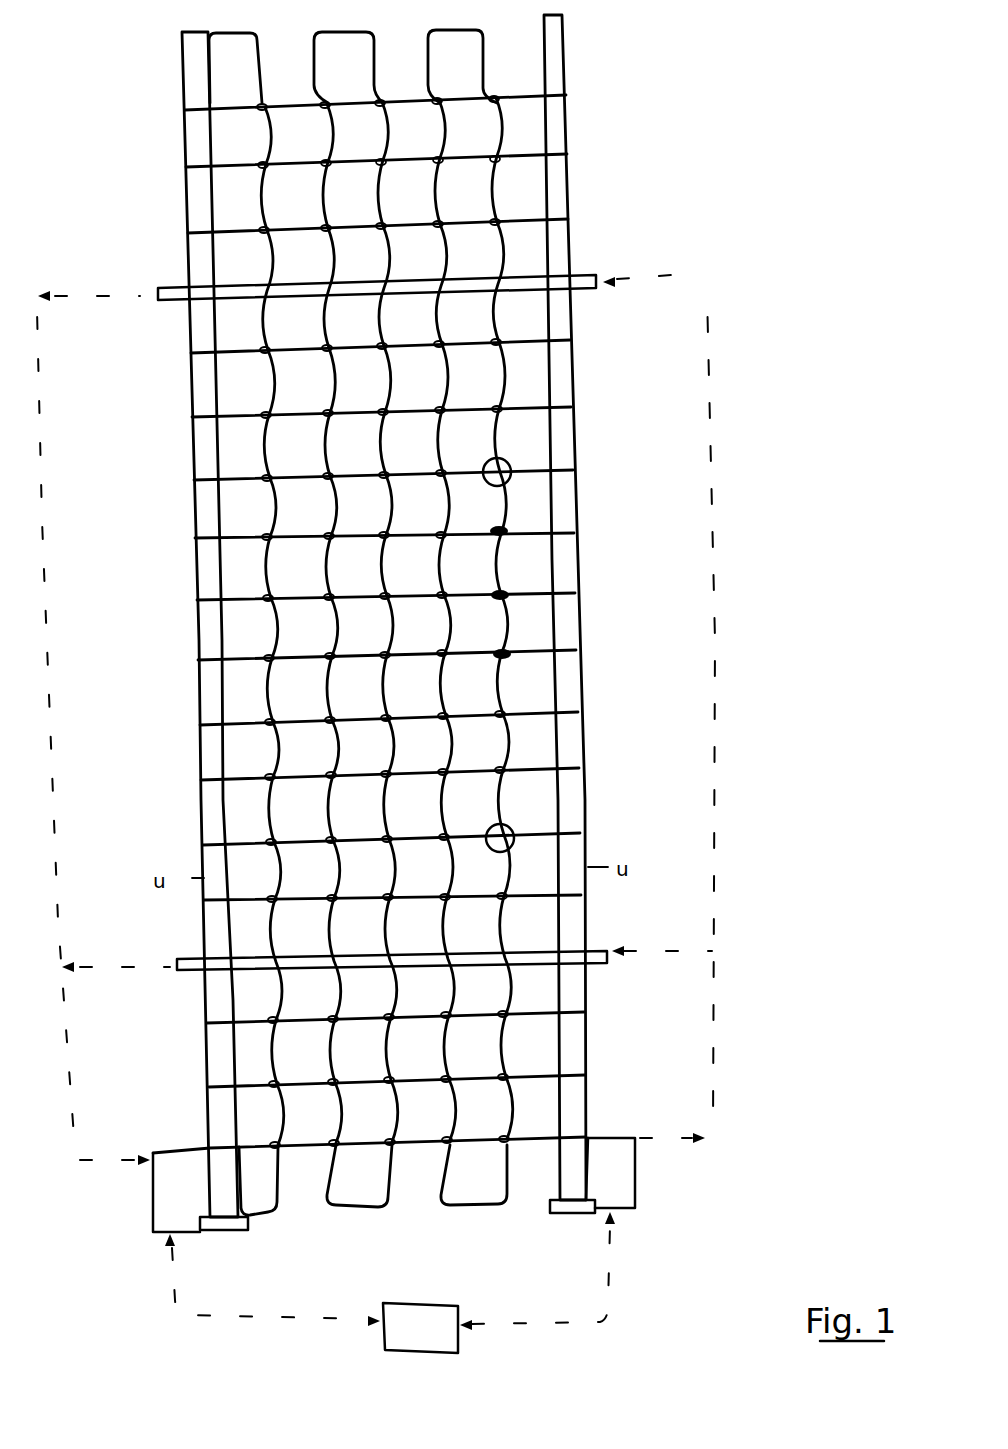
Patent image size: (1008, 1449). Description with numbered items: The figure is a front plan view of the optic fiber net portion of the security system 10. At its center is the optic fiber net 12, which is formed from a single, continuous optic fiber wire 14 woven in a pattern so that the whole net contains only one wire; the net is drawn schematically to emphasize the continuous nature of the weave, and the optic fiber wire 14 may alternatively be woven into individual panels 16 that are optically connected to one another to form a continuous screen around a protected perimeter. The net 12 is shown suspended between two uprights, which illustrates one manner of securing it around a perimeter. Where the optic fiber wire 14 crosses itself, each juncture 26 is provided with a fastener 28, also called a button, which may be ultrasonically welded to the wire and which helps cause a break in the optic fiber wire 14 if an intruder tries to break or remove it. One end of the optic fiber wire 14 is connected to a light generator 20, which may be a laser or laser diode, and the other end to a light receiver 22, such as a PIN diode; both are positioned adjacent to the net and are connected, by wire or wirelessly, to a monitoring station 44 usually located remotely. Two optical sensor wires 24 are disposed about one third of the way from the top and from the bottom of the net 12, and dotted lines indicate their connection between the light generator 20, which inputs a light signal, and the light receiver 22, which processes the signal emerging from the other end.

The security system 10 is at (662, 308).
The optic fiber net 12 is at (506, 186).
The optic fiber wire 14 is at (503, 380).
The panel 16 is at (608, 680).
The light generator 20 is at (640, 1172).
The light receiver 22 is at (152, 1190).
The optical sensor wire 24 is at (183, 298).
The juncture 26 is at (510, 467).
The fastener 28 is at (508, 652).
The monitoring station 44 is at (420, 1328).